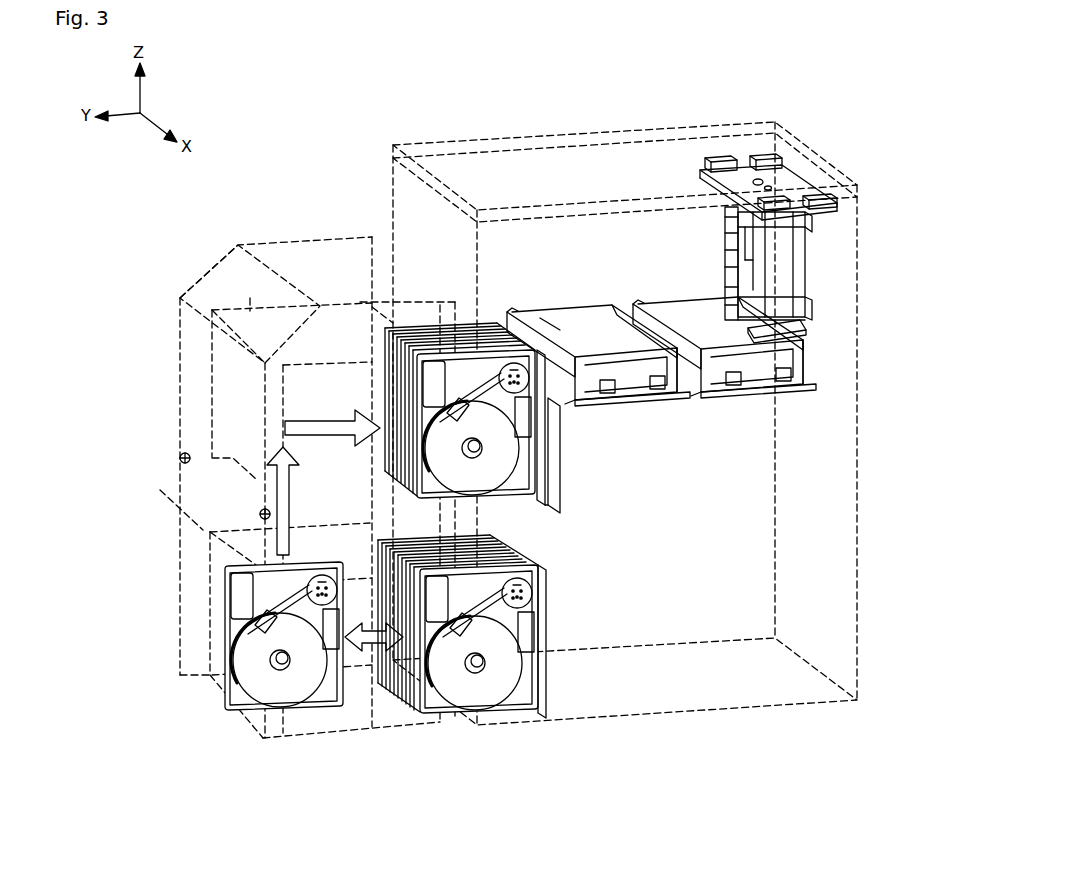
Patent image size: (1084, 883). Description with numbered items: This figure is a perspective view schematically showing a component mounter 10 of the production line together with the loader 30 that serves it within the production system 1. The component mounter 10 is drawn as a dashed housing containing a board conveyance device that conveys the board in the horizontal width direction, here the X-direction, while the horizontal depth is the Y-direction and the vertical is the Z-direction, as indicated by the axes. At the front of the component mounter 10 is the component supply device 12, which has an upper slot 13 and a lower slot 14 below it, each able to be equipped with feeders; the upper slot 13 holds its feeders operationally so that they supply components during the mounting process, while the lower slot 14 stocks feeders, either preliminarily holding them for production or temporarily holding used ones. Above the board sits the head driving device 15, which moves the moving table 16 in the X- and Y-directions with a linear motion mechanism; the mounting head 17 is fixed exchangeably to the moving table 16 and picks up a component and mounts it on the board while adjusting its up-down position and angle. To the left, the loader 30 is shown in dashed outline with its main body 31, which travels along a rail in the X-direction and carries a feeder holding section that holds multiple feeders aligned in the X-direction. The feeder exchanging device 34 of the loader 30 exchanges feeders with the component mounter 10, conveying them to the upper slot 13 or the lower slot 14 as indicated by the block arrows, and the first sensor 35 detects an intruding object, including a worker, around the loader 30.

The production system 1 is at (130, 286).
The component mounter 10 is at (557, 122).
The component supply device 12 is at (447, 312).
The upper slot 13 is at (550, 485).
The lower slot 14 is at (543, 632).
The head driving device 15 is at (762, 142).
The moving table 16 is at (800, 257).
The mounting head 17 is at (755, 300).
The loader 30 is at (172, 332).
The main body 31 is at (178, 527).
The feeder exchanging device 34 is at (260, 514).
The first sensor 35 is at (180, 458).